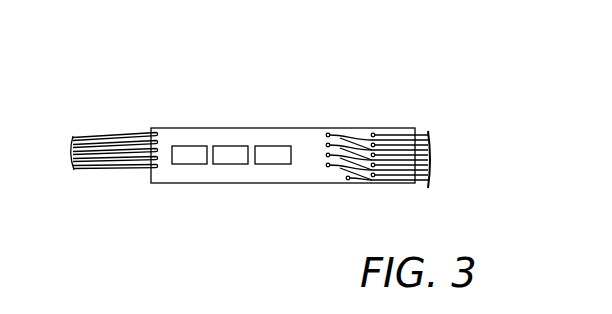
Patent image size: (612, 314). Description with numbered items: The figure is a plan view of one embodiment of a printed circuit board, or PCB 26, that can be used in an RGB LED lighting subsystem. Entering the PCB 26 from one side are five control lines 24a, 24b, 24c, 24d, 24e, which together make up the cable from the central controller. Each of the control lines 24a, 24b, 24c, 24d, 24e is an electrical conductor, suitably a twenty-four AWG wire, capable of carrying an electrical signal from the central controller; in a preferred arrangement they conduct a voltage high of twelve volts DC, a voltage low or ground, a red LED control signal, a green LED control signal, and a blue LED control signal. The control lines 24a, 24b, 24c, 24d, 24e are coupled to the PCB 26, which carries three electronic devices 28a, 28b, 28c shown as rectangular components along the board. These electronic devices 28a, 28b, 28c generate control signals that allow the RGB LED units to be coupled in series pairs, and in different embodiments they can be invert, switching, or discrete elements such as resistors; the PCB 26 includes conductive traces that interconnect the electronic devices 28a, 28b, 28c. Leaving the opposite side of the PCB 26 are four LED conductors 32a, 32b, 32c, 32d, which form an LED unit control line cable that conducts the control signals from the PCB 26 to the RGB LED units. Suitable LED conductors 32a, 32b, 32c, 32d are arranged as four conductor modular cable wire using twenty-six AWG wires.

The control line 24a is at (128, 135).
The control line 24b is at (115, 146).
The control line 24c is at (108, 153).
The control line 24d is at (123, 159).
The control line 24e is at (133, 170).
The printed circuit board (PCB) 26 is at (246, 128).
The electronic device 28a is at (183, 165).
The electronic device 28b is at (228, 165).
The electronic device 28c is at (273, 165).
The LED conductor 32a is at (351, 139).
The LED conductor 32b is at (323, 146).
The LED conductor 32c is at (327, 155).
The LED conductor 32d is at (340, 174).